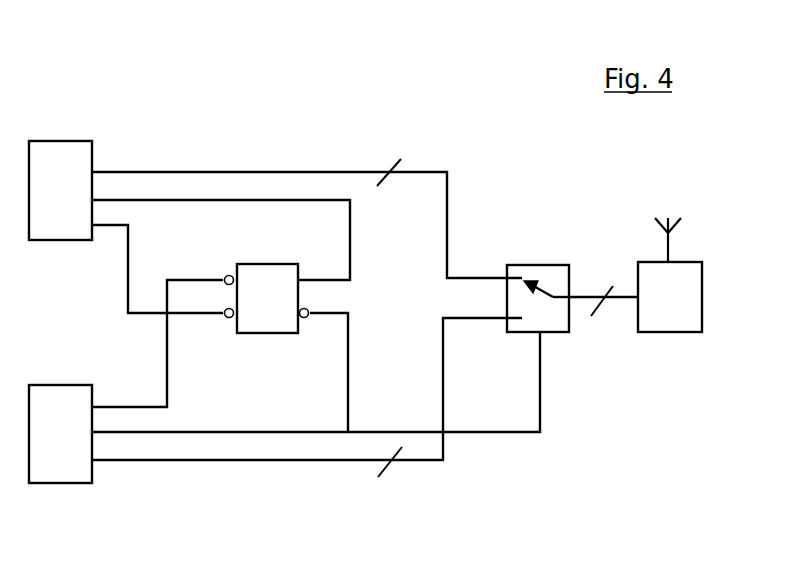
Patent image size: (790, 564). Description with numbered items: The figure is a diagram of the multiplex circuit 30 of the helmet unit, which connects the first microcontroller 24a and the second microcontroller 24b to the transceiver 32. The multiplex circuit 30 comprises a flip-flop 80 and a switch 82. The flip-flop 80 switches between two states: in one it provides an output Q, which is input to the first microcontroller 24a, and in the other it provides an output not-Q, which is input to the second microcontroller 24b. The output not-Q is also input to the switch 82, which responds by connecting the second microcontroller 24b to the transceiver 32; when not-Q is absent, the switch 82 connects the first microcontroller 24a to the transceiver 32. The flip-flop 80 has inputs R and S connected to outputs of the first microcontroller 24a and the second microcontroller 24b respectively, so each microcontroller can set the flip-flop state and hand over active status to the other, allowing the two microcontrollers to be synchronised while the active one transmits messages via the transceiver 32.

The multiplex circuit 30 is at (160, 103).
The first microcontroller 24a is at (51, 140).
The second microcontroller 24b is at (60, 485).
The flip-flop 80 is at (265, 263).
The switch 82 is at (522, 263).
The transceiver 32 is at (703, 310).